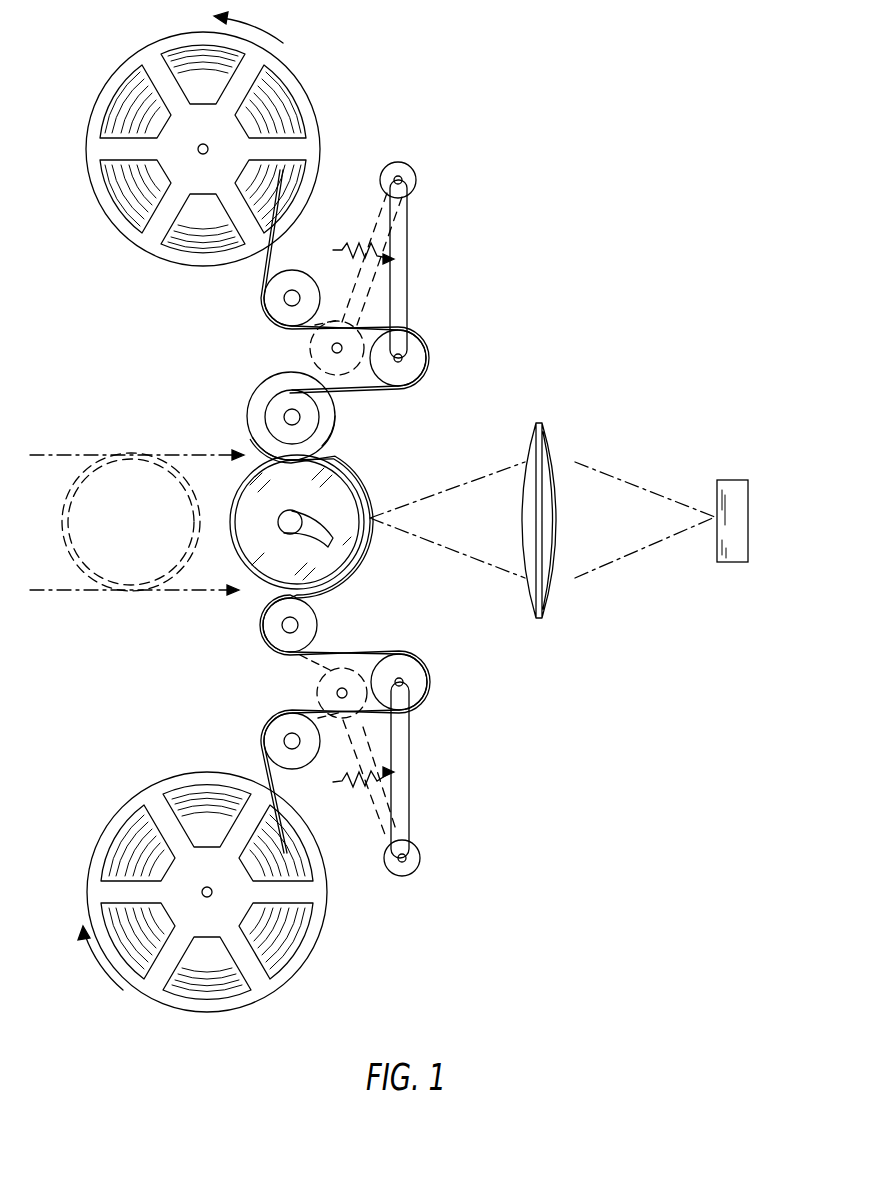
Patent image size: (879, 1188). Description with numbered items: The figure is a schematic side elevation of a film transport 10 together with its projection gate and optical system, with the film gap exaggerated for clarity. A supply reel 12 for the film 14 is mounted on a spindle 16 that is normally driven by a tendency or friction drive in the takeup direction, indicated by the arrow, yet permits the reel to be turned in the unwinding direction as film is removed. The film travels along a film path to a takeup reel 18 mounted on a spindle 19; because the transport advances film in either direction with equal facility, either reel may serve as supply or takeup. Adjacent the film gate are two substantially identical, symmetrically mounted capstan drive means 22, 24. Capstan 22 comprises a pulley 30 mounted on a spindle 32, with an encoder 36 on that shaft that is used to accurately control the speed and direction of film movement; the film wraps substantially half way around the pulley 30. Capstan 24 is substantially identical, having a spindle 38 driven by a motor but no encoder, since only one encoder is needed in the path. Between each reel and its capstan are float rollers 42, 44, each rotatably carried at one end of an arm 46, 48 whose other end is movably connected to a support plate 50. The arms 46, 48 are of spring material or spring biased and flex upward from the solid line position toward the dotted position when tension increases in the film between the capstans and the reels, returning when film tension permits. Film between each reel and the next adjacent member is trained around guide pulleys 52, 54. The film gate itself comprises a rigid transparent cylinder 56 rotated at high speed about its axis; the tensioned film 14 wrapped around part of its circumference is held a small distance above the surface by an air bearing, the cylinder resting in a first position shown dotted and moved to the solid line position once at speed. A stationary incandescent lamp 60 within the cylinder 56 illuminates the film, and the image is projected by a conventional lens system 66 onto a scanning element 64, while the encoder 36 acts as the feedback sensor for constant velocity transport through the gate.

The film transport 10 is at (528, 352).
The supply reel 12 is at (300, 80).
The film 14 is at (340, 511).
The spindle 16 is at (280, 125).
The takeup reel 18 is at (193, 885).
The spindle 19 is at (212, 897).
The capstan drive means 22 is at (259, 386).
The capstan drive means 24 is at (255, 625).
The pulley 30 is at (234, 412).
The spindle 32 is at (359, 447).
The encoder 36 is at (346, 418).
The spindle 38 is at (324, 612).
The float roller 42 is at (438, 346).
The float roller 44 is at (439, 682).
The arm 46 is at (403, 277).
The arm 48 is at (403, 756).
The support plate 50 is at (443, 497).
The guide pulley 52 is at (238, 298).
The guide pulley 54 is at (252, 740).
The rigid transparent cylinder 56 is at (238, 473).
The incandescent lamp 60 is at (266, 546).
The scanning element 64 is at (716, 484).
The lens system 66 is at (372, 502).